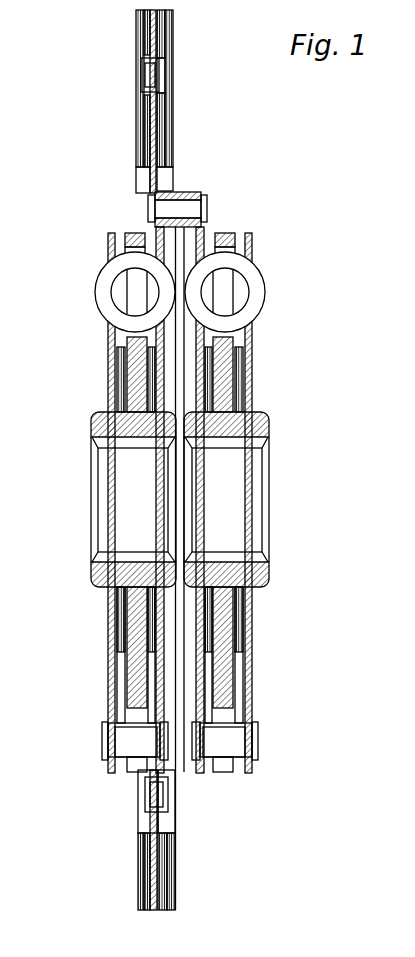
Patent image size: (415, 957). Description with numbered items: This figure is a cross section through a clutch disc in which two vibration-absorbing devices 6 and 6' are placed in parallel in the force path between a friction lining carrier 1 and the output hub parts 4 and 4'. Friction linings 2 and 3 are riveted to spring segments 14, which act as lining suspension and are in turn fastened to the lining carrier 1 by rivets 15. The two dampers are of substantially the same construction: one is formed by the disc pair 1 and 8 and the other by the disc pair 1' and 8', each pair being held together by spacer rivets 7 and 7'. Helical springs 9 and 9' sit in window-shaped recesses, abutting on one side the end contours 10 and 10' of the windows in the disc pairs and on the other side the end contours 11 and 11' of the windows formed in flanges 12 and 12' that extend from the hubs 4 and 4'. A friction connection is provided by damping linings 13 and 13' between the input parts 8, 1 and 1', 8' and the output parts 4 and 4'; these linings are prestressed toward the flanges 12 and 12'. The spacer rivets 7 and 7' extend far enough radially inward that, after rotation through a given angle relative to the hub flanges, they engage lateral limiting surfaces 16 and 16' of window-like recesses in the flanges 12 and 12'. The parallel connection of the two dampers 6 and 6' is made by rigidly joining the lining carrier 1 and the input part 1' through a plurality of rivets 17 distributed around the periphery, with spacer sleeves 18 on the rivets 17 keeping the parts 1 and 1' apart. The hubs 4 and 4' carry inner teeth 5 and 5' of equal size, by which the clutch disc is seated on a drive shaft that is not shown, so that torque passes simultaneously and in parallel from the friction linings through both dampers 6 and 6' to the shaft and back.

The friction lining carrier 1 is at (119, 500).
The input part 1' is at (251, 500).
The friction lining 2 is at (143, 112).
The friction lining 3 is at (168, 30).
The hub part 4 is at (105, 495).
The hub part 4' is at (243, 499).
The inner teeth 5 is at (133, 499).
The inner teeth 5' is at (226, 499).
The vibration-absorbing device 6 is at (92, 492).
The vibration-absorbing device 6' is at (252, 500).
The spacer rivet 7 is at (115, 741).
The spacer rivet 7' is at (244, 741).
The disc part 8 is at (85, 503).
The disc part 8' is at (273, 503).
The helical spring 9 is at (113, 290).
The helical spring 9' is at (252, 292).
The end contour 10 is at (114, 221).
The end contour 10' is at (259, 226).
The end contour 11 is at (99, 292).
The end contour 11' is at (259, 292).
The flange 12 is at (77, 374).
The flange 12' is at (256, 374).
The damping lining 13 is at (101, 655).
The damping lining 13' is at (255, 655).
The spring segment 14 is at (152, 35).
The rivet 15 is at (155, 797).
The lateral limiting surface 16 is at (112, 777).
The lateral limiting surface 16' is at (233, 780).
The rivet 17 is at (196, 211).
The spacer sleeve 18 is at (182, 193).